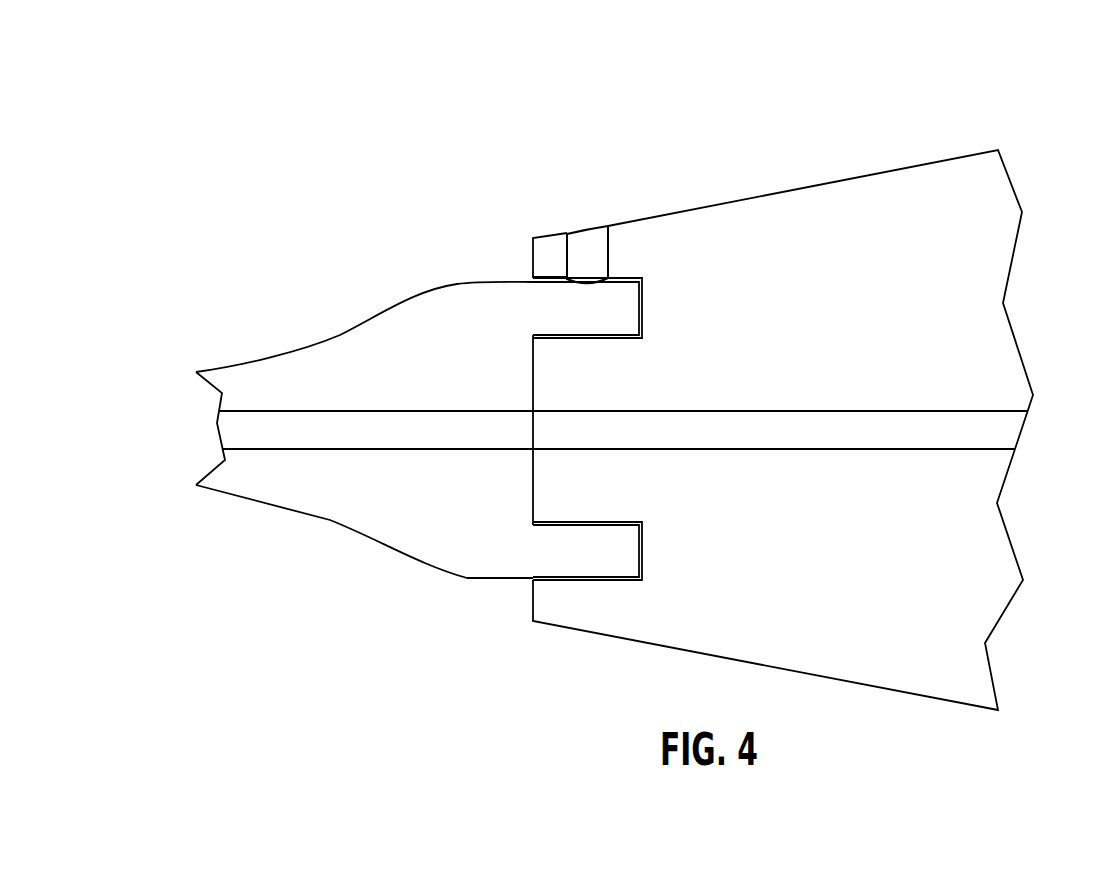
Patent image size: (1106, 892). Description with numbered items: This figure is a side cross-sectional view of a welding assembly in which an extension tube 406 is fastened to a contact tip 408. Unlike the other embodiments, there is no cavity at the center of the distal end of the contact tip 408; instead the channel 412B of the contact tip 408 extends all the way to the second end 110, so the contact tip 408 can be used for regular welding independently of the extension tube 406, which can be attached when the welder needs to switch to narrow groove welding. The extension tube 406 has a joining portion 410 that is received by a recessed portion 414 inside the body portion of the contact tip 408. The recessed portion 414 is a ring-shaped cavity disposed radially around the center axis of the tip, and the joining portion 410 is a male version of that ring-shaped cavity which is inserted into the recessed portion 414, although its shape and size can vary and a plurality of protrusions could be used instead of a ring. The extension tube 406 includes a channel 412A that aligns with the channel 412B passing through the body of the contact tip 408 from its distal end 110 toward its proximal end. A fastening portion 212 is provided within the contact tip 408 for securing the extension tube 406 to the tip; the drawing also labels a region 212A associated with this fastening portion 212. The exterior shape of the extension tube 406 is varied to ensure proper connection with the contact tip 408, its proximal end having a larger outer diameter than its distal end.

The second end 110 is at (532, 251).
The fastening portion 212 is at (588, 245).
The fastener end 212A is at (617, 254).
The extension tube 406 is at (453, 547).
The contact tip 408 is at (920, 207).
The joining portion 410 is at (562, 308).
The channel 412A is at (325, 433).
The channel 412B is at (962, 437).
The recessed portion 414 is at (643, 283).